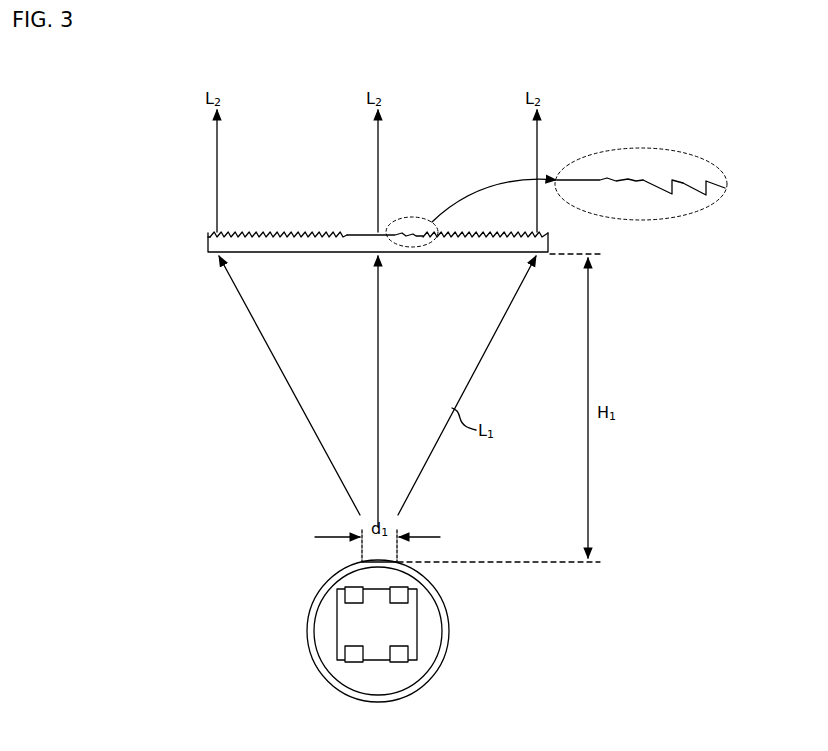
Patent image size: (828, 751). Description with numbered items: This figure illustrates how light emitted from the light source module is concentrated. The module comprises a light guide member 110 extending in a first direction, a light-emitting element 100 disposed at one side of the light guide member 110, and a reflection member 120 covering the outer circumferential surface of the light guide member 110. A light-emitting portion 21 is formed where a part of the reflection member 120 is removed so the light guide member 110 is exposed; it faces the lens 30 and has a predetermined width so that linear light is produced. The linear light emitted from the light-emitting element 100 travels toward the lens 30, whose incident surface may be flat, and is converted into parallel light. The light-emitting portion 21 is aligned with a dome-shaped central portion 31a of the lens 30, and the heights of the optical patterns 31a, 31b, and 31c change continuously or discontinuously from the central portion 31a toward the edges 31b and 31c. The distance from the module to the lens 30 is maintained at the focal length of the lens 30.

The lens 30 is at (199, 236).
The central portion 31a is at (593, 180).
The optical pattern 31b is at (647, 181).
The optical pattern 31c is at (690, 184).
The light-emitting portion 21 is at (388, 562).
The light-emitting element 100 is at (408, 618).
The light guide member 110 is at (435, 637).
The reflection member 120 is at (448, 592).